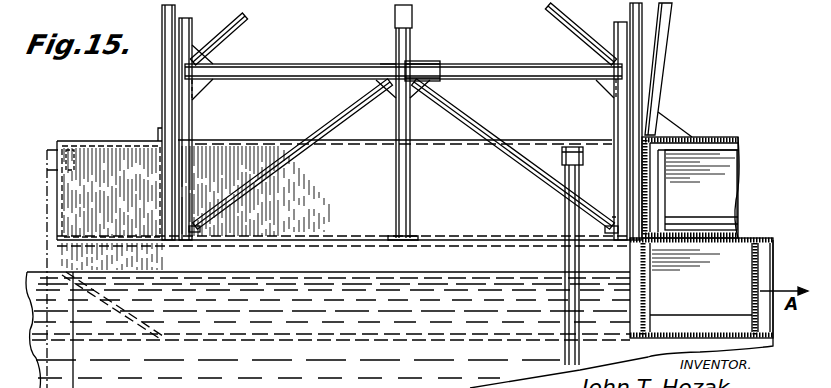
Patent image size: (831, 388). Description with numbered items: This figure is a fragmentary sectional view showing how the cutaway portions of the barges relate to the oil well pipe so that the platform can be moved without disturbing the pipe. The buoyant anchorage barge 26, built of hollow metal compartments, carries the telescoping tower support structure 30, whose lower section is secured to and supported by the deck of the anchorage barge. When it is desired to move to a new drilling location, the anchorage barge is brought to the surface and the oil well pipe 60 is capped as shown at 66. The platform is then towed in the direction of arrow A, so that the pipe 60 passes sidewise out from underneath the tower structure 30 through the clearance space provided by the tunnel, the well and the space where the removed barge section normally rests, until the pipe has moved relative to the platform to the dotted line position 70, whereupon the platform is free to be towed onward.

The anchorage barge 26 is at (750, 238).
The tower support structure 30 is at (468, 63).
The oil well pipe 60 is at (563, 206).
The cap 66 is at (586, 147).
The dotted line position 70 is at (46, 150).